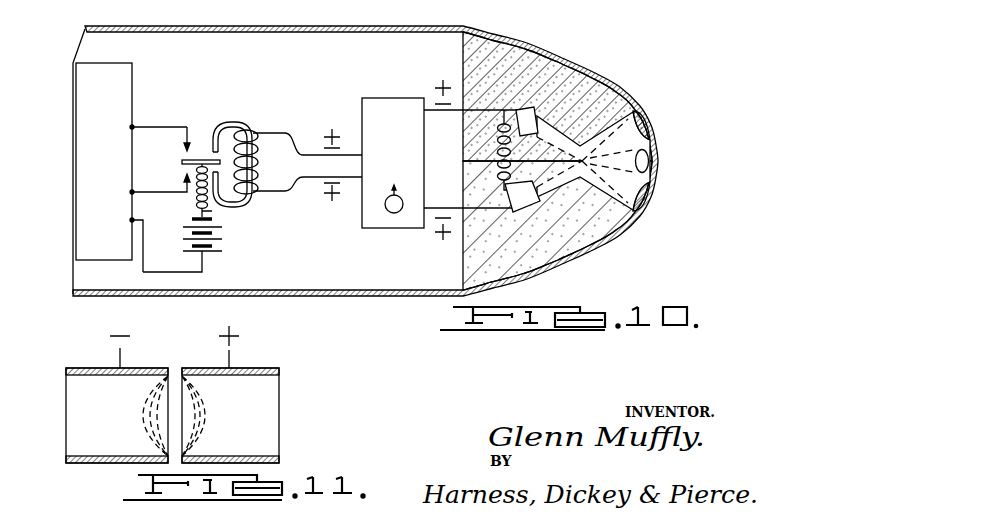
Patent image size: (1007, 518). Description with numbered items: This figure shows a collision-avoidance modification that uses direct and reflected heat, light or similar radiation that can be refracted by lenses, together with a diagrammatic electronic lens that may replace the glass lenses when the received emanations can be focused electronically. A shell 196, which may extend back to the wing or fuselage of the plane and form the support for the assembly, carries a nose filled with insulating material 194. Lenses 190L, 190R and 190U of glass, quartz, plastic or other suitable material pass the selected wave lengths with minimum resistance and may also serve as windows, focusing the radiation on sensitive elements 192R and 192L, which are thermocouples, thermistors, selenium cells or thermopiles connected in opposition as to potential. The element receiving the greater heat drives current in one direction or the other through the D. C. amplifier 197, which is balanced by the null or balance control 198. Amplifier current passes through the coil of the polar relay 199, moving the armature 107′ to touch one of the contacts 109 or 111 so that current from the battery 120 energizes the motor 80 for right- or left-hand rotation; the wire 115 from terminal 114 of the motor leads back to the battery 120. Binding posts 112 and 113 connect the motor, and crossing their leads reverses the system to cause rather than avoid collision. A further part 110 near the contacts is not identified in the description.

The motor 80 is at (106, 165).
The binding post 113 is at (133, 127).
The contact 111 is at (187, 126).
The armature 107′ is at (199, 158).
The polar relay 199 is at (254, 134).
The D. C. amplifier 197 is at (402, 138).
The null or balance control 198 is at (390, 212).
The shell 196 is at (438, 26).
The insulating material 194 is at (508, 43).
The sensitive element 192L is at (538, 109).
The sensitive element 192R is at (540, 213).
The lens 190R is at (654, 126).
The lens 190U is at (646, 161).
The lens 190L is at (654, 188).
The binding post 112 is at (132, 192).
The contact 109 is at (188, 194).
The lead 110 is at (207, 211).
The battery 120 is at (219, 234).
The terminal 114 is at (132, 220).
The wire 115 is at (190, 272).